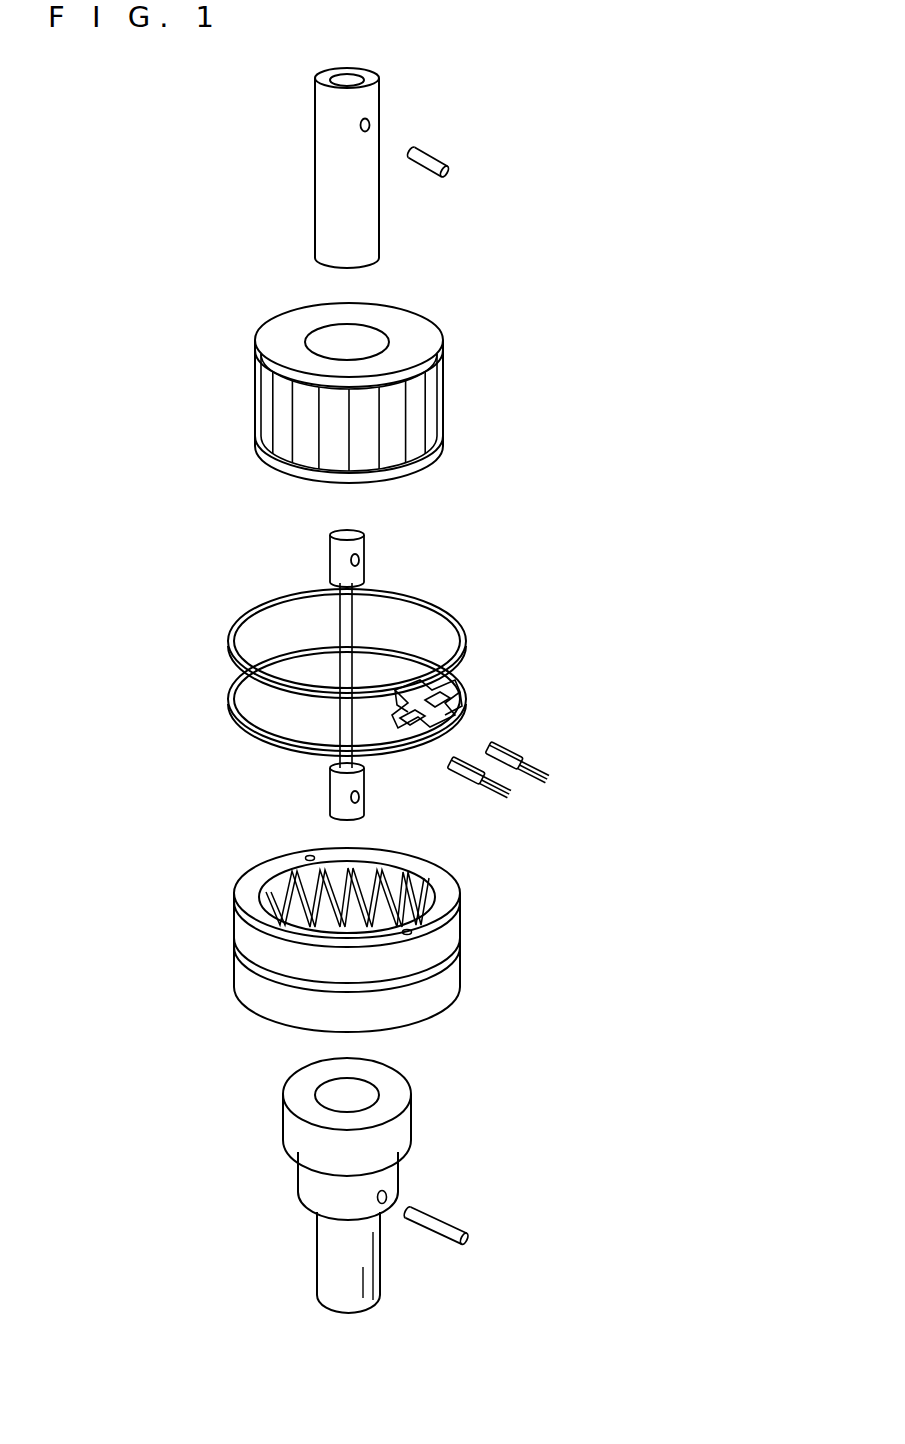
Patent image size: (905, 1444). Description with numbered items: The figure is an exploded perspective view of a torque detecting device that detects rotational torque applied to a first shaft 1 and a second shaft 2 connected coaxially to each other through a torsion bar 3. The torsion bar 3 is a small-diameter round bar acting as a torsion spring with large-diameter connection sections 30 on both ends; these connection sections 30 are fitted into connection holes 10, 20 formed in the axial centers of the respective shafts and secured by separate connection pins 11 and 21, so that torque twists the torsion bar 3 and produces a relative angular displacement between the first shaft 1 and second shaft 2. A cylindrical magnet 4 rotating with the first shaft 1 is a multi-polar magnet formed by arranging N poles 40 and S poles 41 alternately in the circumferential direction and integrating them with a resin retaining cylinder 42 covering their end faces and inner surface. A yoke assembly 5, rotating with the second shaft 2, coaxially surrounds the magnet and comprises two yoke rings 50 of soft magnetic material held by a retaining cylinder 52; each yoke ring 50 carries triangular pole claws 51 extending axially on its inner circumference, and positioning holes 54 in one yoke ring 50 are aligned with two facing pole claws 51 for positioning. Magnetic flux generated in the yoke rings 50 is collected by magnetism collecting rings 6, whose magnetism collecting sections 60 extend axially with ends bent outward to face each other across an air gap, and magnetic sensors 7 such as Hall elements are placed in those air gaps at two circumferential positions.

The first shaft 1 is at (323, 180).
The connection hole 10 is at (351, 76).
The connection pin 11 is at (431, 157).
The second shaft 2 is at (320, 1262).
The connection hole 20 is at (366, 1092).
The connection pin 21 is at (450, 1223).
The torsion bar 3 is at (342, 621).
The connection section 30 is at (330, 563).
The cylindrical magnet 4 is at (200, 356).
The N pole 40 is at (336, 396).
The S pole 41 is at (358, 465).
The retaining cylinder 42 is at (320, 383).
The yoke assembly 5 is at (346, 922).
The yoke ring 50 is at (235, 940).
The pole claw 51 is at (271, 896).
The retaining cylinder 52 is at (455, 970).
The positioning hole 54 is at (306, 856).
The magnetism collecting ring 6 is at (230, 645).
The magnetism collecting section 60 is at (445, 700).
The magnetic sensor 7 is at (459, 766).